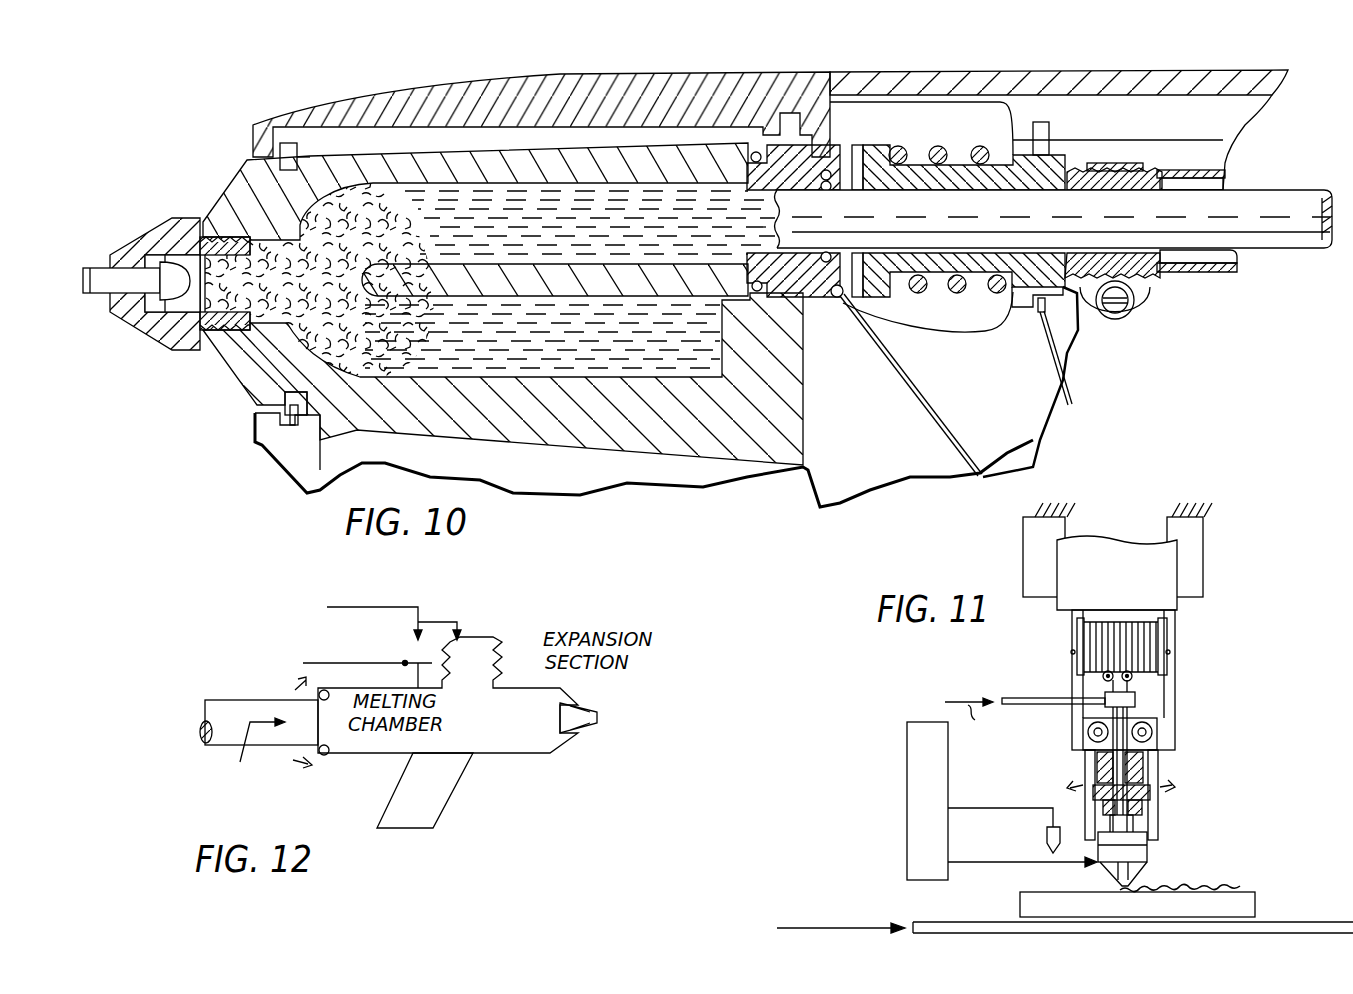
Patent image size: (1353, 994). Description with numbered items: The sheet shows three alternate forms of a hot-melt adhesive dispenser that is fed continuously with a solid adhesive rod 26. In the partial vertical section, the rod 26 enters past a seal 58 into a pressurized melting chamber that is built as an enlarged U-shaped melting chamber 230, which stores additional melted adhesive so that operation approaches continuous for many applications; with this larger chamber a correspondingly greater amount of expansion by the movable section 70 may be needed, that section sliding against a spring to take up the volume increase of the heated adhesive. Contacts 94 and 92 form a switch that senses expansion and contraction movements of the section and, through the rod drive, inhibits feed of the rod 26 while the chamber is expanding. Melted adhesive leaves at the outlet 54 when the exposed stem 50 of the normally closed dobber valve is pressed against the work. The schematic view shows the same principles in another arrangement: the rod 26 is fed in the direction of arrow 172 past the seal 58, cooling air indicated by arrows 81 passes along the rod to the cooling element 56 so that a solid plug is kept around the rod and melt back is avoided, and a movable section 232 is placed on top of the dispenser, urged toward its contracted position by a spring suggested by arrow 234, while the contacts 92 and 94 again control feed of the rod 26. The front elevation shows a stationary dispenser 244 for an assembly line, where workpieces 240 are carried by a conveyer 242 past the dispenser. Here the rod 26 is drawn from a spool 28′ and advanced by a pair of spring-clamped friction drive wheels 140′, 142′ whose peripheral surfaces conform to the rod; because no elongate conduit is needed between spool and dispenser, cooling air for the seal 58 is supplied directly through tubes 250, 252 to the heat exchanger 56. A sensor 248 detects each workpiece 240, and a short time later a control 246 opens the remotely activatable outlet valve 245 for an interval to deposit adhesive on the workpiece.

In FIG. 10, the adhesive rod 26 is at (1285, 246).
In FIG. 12, the adhesive rod 26 is at (243, 700).
In FIG. 11, the adhesive rod 26 is at (1135, 697).
In FIG. 11, the spool 28′ is at (1160, 635).
In FIG. 10, the exposed stem 50 is at (97, 268).
In FIG. 12, the exposed stem 50 is at (597, 712).
In FIG. 12, the outlet 54 is at (578, 738).
In FIG. 11, the outlet 54 is at (1130, 872).
In FIG. 11, the cooling element 56 is at (1097, 760).
In FIG. 12, the seal 58 is at (326, 755).
In FIG. 10, the movable section 70 is at (945, 312).
In FIG. 12, the arrows 81 is at (291, 736).
In FIG. 11, the arrows 81 is at (1195, 800).
In FIG. 10, the contact 92 is at (1028, 318).
In FIG. 12, the contact 92 is at (413, 634).
In FIG. 10, the contact 94 is at (838, 300).
In FIG. 12, the contact 94 is at (367, 673).
In FIG. 11, the drive wheel 140′ is at (1088, 732).
In FIG. 11, the drive wheel 142′ is at (1152, 732).
In FIG. 12, the arrow 172 is at (250, 752).
In FIG. 10, the enlarged U-shaped melting chamber 230 is at (618, 348).
In FIG. 12, the movable section 232 is at (505, 640).
In FIG. 12, the arrow 234 is at (477, 632).
In FIG. 11, the workpiece 240 is at (1255, 897).
In FIG. 11, the conveyer 242 is at (955, 915).
In FIG. 11, the dispenser 244 is at (1190, 680).
In FIG. 11, the remotely activatable outlet valve 245 is at (1130, 858).
In FIG. 11, the control 246 is at (907, 805).
In FIG. 11, the sensor 248 is at (1047, 838).
In FIG. 11, the tube 250 is at (1025, 682).
In FIG. 11, the tube 252 is at (1135, 712).